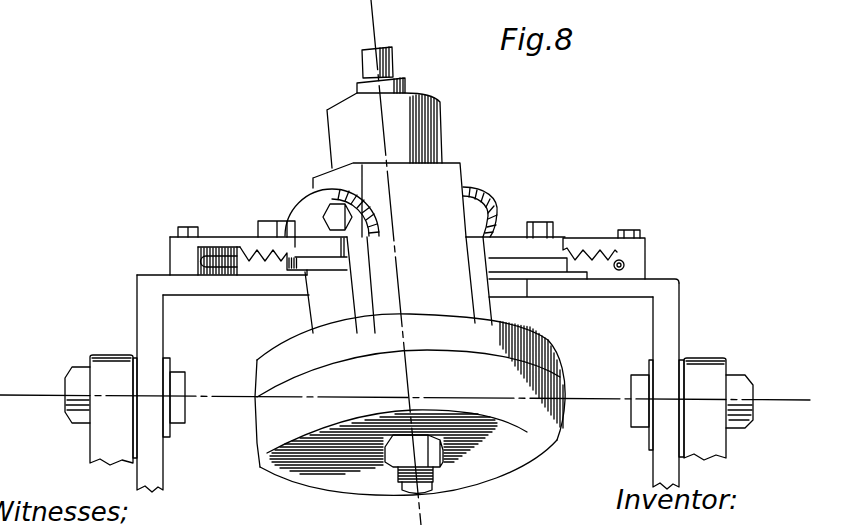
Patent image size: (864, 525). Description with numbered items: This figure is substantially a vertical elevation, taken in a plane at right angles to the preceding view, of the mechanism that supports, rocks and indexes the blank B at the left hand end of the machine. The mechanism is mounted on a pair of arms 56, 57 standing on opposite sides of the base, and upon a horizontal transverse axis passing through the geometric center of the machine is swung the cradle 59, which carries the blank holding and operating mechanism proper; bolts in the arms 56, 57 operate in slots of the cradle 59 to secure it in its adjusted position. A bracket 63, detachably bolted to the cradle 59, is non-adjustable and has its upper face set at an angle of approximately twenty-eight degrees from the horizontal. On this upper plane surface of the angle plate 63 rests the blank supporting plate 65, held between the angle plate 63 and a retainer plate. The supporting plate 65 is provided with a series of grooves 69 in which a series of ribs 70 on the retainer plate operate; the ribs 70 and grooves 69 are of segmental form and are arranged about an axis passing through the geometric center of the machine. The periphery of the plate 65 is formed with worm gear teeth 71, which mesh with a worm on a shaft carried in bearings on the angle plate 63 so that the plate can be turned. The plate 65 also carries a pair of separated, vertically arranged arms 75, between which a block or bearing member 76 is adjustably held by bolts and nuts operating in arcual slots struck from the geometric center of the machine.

The arm 56 is at (708, 383).
The arm 57 is at (105, 433).
The cradle 59 is at (152, 325).
The bracket 63 is at (160, 287).
The blank supporting plate 65 is at (247, 252).
The grooves 69 is at (250, 250).
The ribs 70 is at (580, 250).
The worm gear teeth 71 is at (207, 248).
The arms 75 is at (312, 212).
The bearing member 76 is at (452, 182).
The blank B is at (277, 412).